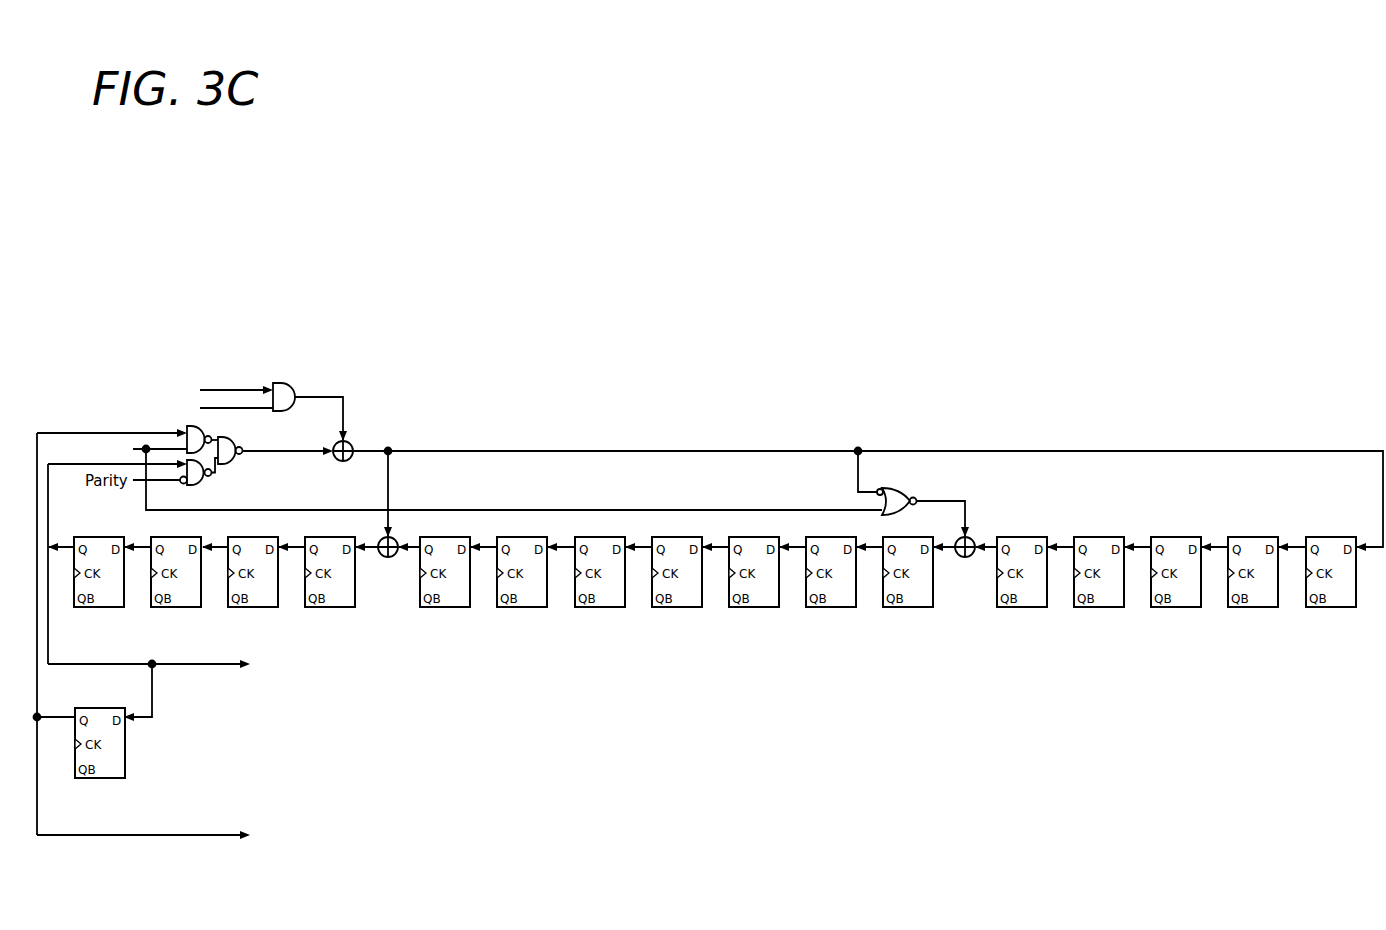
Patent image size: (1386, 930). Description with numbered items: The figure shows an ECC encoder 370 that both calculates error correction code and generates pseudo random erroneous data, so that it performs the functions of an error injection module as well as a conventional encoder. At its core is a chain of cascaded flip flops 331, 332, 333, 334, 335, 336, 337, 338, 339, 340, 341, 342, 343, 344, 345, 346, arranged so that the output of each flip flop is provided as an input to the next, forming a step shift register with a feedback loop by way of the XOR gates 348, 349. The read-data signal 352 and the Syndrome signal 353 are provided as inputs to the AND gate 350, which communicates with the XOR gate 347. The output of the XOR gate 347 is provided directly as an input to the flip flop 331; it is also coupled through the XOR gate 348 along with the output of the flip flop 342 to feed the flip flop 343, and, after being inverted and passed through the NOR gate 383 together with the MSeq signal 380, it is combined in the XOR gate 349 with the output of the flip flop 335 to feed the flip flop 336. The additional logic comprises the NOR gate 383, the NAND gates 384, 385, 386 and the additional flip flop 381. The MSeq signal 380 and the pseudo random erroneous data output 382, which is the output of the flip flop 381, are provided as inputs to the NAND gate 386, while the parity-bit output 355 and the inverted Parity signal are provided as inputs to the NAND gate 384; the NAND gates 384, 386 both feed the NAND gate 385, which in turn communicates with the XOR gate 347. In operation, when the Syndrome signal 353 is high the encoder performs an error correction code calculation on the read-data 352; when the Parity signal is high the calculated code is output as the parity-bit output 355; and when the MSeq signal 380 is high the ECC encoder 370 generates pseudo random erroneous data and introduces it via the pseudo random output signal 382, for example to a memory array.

The flip flop 331 is at (1318, 607).
The flip flop 332 is at (1240, 607).
The flip flop 333 is at (1163, 607).
The flip flop 334 is at (1086, 607).
The flip flop 335 is at (1009, 607).
The flip flop 336 is at (895, 607).
The flip flop 337 is at (818, 607).
The flip flop 338 is at (741, 607).
The flip flop 339 is at (664, 607).
The flip flop 340 is at (587, 607).
The flip flop 341 is at (509, 607).
The flip flop 342 is at (432, 607).
The flip flop 343 is at (317, 607).
The flip flop 344 is at (240, 607).
The flip flop 345 is at (163, 607).
The flip flop 346 is at (86, 607).
The XOR gate 347 is at (352, 443).
The XOR gate 348 is at (396, 539).
The XOR gate 349 is at (973, 539).
The AND gate 350 is at (298, 386).
The read-data signal 352 is at (150, 372).
The Syndrome signal 353 is at (115, 408).
The parity-bit output signal 355 is at (190, 668).
The ECC encoder 370 is at (281, 237).
The MSeq signal 380 is at (80, 443).
The additional flip flop 381 is at (98, 778).
The pseudo random erroneous data output signal 382 is at (190, 838).
The NOR gate 383 is at (895, 489).
The NAND gate 384 is at (200, 487).
The NAND gate 385 is at (236, 463).
The NAND gate 386 is at (205, 427).